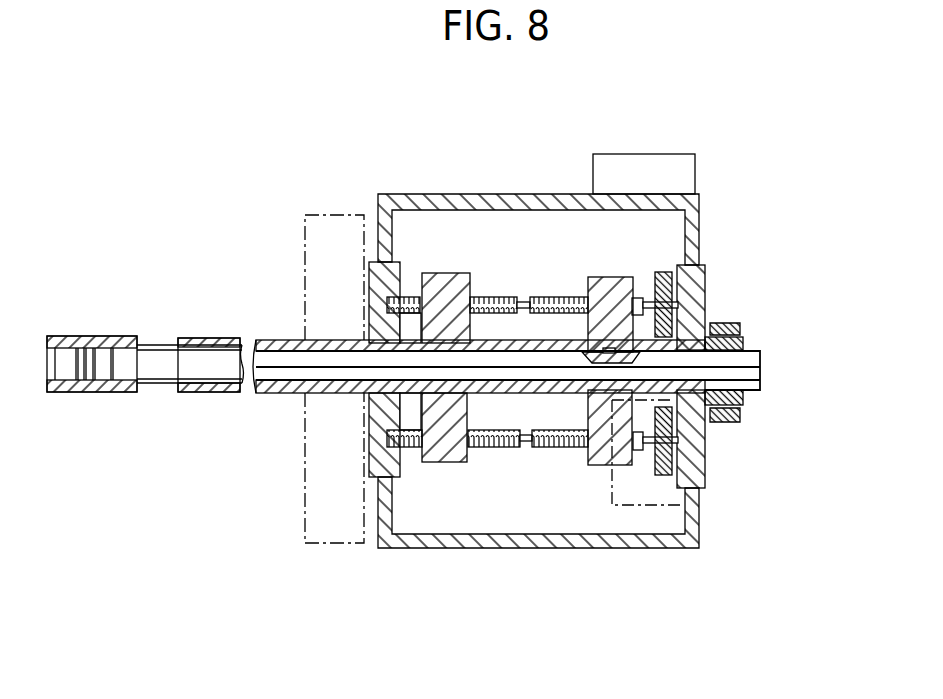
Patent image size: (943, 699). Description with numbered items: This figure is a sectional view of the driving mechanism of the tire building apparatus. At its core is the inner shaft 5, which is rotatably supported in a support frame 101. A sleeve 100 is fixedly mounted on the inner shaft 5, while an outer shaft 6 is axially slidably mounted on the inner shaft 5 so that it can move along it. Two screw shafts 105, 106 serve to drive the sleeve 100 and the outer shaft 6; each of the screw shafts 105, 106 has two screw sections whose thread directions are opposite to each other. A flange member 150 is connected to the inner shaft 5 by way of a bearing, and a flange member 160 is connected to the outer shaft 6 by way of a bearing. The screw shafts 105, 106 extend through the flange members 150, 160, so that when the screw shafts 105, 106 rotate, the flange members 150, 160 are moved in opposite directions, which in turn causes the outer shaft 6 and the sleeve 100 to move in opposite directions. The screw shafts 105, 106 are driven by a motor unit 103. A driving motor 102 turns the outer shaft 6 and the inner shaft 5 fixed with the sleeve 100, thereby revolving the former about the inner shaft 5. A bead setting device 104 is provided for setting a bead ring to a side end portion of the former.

The inner shaft 5 is at (343, 394).
The outer shaft 6 is at (207, 338).
The sleeve 100 is at (108, 340).
The support frame 101 is at (720, 307).
The driving motor 102 is at (645, 153).
The motor unit 103 is at (693, 498).
The bead setting device 104 is at (323, 227).
The screw shaft 105 is at (493, 296).
The screw shaft 106 is at (493, 450).
The flange member 150 is at (602, 450).
The flange member 160 is at (443, 455).